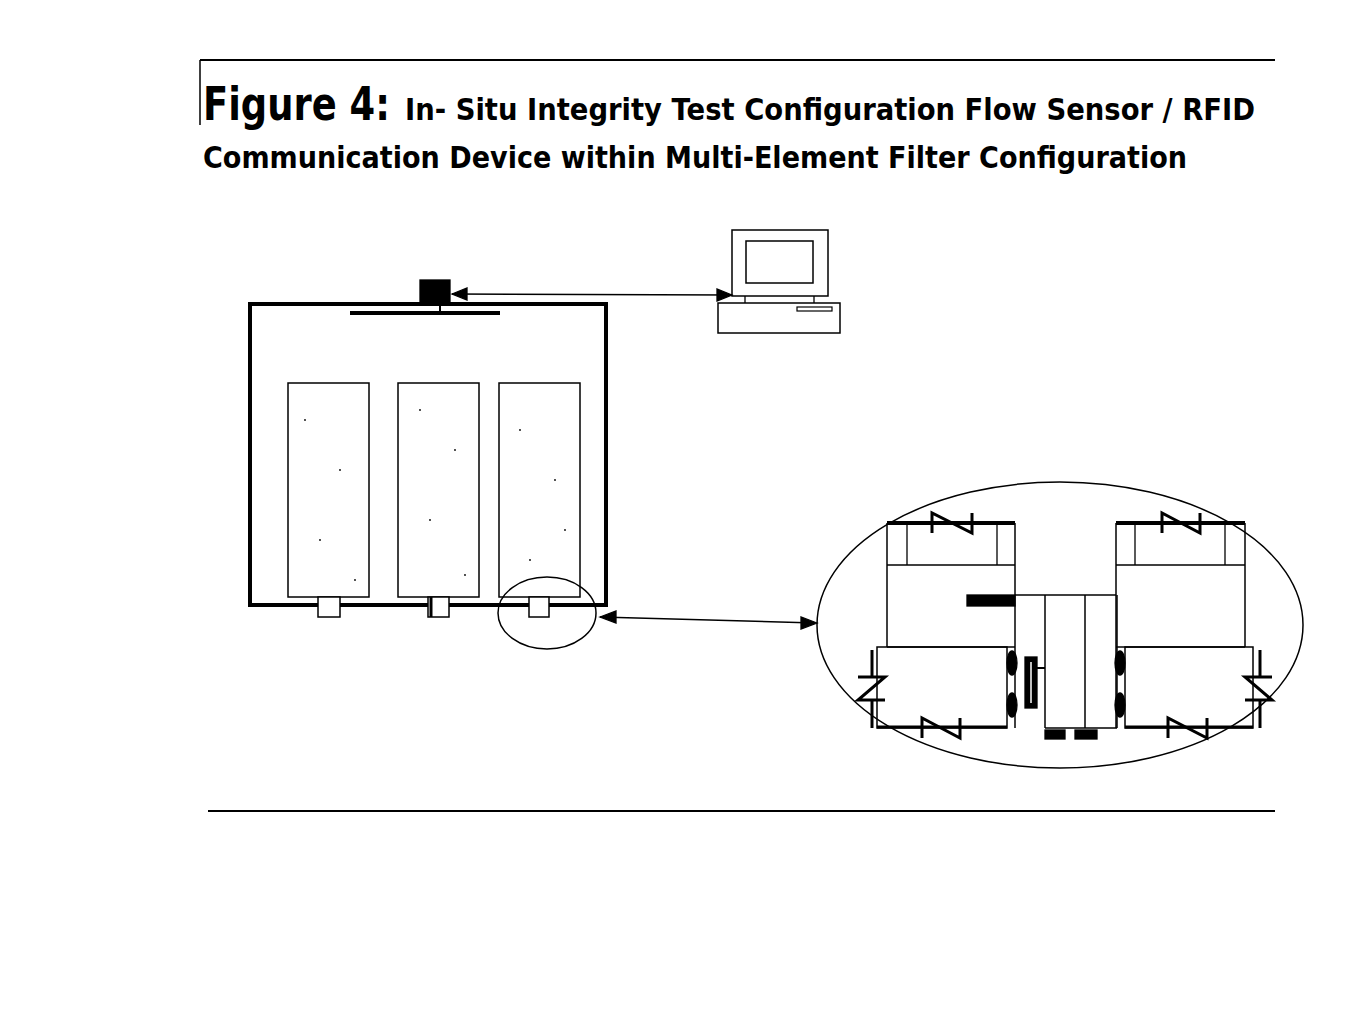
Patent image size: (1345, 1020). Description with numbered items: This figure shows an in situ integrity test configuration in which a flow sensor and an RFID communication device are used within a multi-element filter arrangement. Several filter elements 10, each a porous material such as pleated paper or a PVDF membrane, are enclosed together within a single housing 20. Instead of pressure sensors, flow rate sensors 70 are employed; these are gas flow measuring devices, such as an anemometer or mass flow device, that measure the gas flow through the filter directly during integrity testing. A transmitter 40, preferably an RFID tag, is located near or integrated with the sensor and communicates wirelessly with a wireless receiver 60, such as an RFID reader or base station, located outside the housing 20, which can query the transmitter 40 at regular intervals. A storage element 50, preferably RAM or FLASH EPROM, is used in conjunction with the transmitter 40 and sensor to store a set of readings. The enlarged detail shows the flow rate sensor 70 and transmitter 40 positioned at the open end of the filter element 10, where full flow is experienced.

The filter element 10 is at (338, 528).
The housing 20 is at (610, 504).
The transmitter 40 is at (437, 617).
The storage element 50 is at (448, 281).
The wireless receiver 60 is at (800, 261).
The flow rate sensor 70 is at (432, 615).